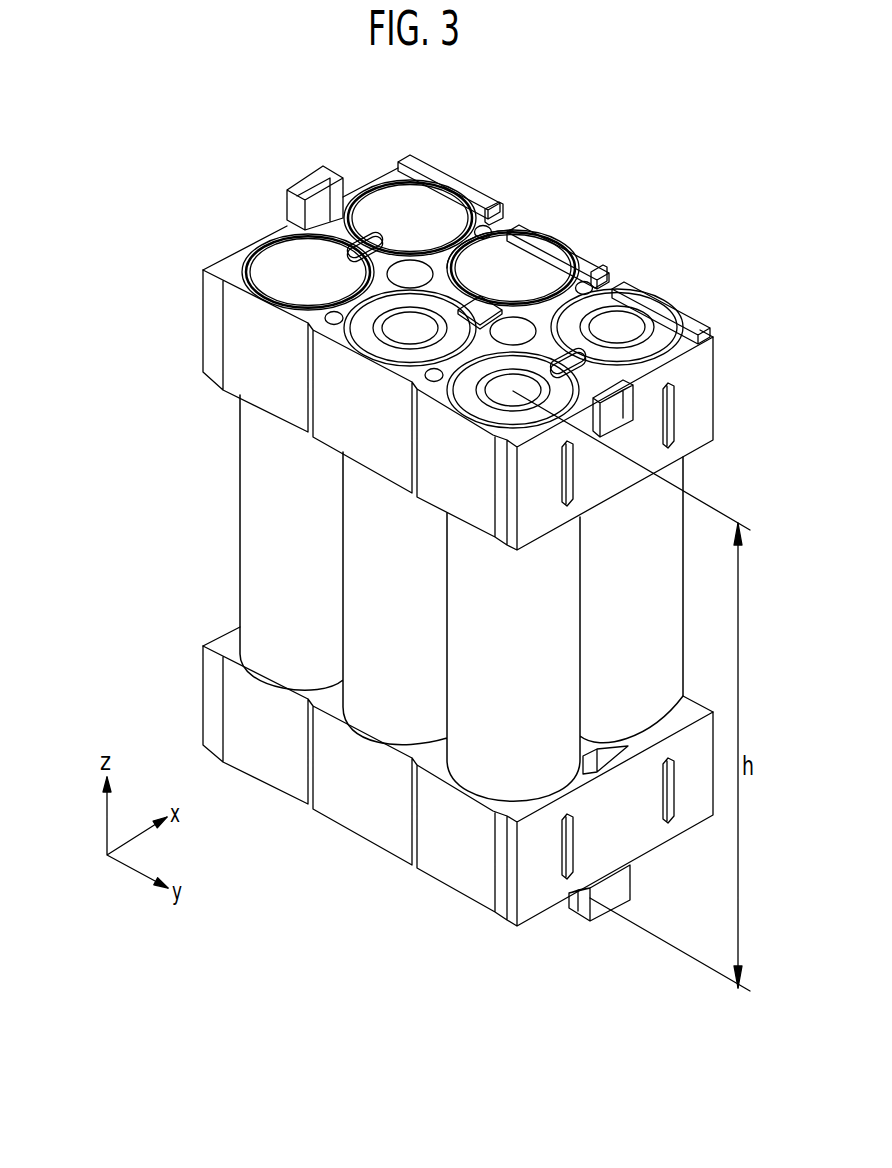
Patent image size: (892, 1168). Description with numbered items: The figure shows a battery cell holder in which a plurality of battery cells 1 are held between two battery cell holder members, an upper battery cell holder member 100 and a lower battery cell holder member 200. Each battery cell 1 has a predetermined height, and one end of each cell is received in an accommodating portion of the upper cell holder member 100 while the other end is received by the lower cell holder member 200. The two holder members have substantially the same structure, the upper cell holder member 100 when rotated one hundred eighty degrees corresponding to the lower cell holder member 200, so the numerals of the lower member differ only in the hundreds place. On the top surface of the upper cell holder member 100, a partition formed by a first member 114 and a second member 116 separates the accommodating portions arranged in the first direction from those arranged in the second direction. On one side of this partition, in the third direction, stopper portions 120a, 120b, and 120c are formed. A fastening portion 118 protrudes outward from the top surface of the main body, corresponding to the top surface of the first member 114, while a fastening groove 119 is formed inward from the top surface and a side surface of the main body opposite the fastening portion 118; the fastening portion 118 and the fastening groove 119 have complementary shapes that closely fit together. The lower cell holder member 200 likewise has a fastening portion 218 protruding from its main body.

The battery cell 1 is at (230, 493).
The battery cell holder member 100 is at (234, 235).
The first member 114 is at (340, 233).
The second member 116 is at (456, 243).
The fastening portion 118 is at (310, 180).
The fastening groove 119 is at (615, 408).
The stopper portion 120a is at (375, 236).
The stopper portion 120b is at (485, 308).
The stopper portion 120c is at (575, 353).
The battery cell holder member 200 is at (214, 621).
The fastening portion 218 is at (613, 887).